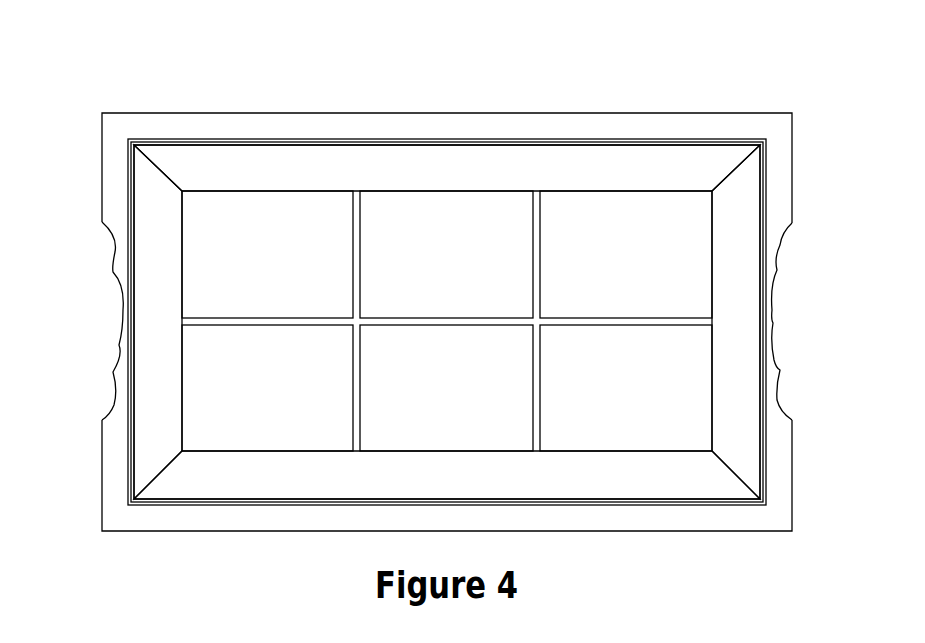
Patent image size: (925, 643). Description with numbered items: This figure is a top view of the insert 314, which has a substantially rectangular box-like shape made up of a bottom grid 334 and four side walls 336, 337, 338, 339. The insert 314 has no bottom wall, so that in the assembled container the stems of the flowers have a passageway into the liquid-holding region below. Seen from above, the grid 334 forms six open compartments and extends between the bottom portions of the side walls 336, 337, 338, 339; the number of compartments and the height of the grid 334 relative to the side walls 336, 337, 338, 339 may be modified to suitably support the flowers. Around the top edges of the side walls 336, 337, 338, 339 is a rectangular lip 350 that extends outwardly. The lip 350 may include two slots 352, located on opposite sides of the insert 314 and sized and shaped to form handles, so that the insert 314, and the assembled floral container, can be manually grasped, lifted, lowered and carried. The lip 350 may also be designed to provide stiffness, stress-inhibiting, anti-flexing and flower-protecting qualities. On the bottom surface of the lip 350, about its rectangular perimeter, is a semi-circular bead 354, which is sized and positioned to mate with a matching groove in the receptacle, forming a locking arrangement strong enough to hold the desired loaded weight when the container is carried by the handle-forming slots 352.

The insert 314 is at (508, 88).
The bottom grid 334 is at (637, 320).
The side wall 336 is at (159, 227).
The side wall 337 is at (287, 165).
The side wall 338 is at (728, 415).
The side wall 339 is at (605, 476).
The rectangular lip 350 is at (713, 140).
The slots 352 is at (122, 322).
The bead 354 is at (421, 148).